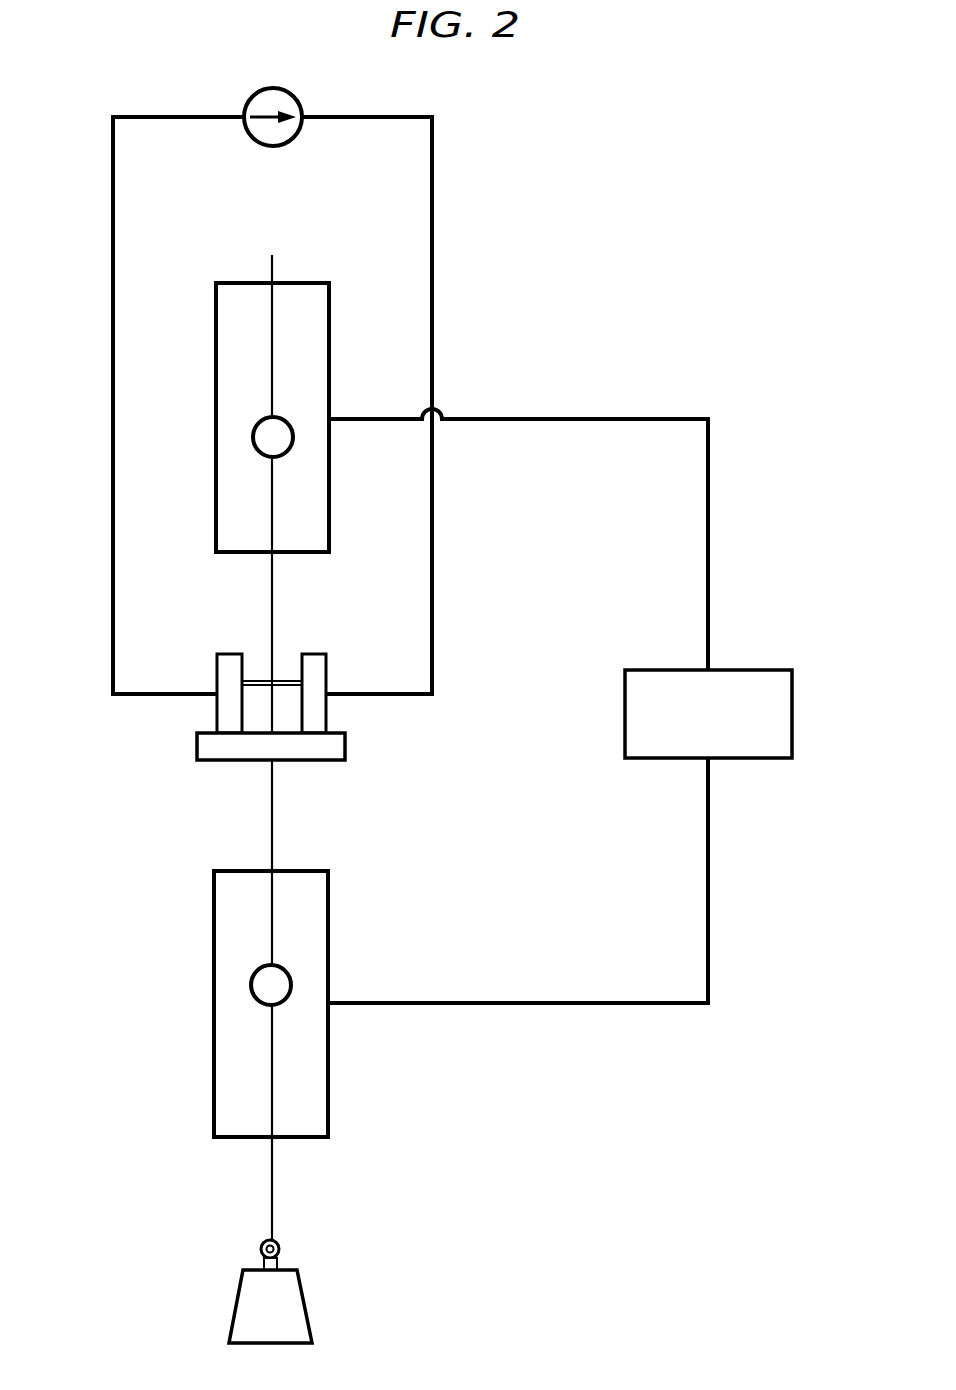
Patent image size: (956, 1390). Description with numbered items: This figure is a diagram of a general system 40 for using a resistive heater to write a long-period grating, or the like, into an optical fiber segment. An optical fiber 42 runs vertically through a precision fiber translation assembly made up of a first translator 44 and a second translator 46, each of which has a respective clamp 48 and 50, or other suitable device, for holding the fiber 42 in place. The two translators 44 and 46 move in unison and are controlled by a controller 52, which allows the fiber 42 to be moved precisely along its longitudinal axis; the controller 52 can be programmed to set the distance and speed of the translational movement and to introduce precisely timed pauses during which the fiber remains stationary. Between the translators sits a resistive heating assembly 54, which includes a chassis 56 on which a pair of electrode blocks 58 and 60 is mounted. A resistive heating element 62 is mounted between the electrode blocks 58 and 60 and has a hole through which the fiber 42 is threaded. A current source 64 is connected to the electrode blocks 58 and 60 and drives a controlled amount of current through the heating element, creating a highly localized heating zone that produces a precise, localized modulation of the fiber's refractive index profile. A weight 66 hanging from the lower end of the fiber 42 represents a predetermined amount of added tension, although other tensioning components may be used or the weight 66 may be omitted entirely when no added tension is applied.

The system 40 is at (640, 254).
The optical fiber 42 is at (274, 268).
The first translator 44 is at (332, 365).
The second translator 46 is at (332, 940).
The clamp 48 is at (264, 419).
The clamp 50 is at (262, 967).
The controller 52 is at (795, 703).
The resistive heating assembly 54 is at (282, 664).
The chassis 56 is at (346, 744).
The electrode block 58 is at (216, 672).
The electrode block 60 is at (327, 667).
The resistive heating element 62 is at (262, 679).
The current source 64 is at (258, 90).
The weight 66 is at (307, 1303).